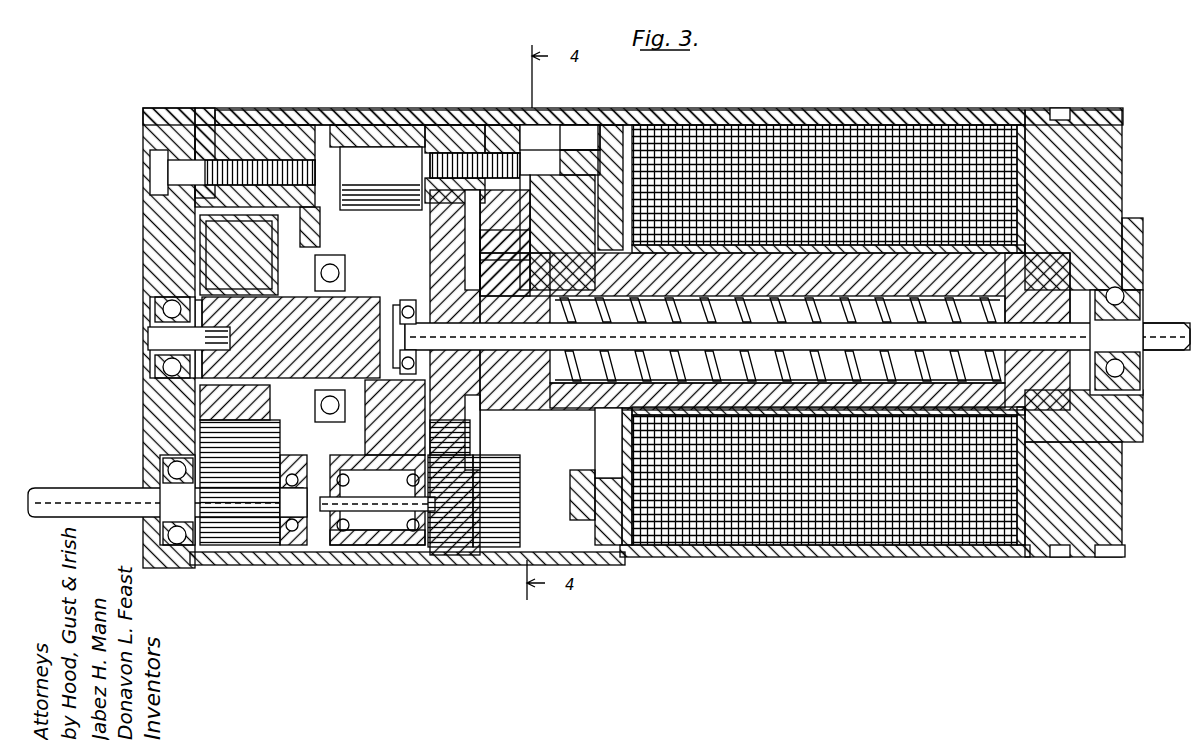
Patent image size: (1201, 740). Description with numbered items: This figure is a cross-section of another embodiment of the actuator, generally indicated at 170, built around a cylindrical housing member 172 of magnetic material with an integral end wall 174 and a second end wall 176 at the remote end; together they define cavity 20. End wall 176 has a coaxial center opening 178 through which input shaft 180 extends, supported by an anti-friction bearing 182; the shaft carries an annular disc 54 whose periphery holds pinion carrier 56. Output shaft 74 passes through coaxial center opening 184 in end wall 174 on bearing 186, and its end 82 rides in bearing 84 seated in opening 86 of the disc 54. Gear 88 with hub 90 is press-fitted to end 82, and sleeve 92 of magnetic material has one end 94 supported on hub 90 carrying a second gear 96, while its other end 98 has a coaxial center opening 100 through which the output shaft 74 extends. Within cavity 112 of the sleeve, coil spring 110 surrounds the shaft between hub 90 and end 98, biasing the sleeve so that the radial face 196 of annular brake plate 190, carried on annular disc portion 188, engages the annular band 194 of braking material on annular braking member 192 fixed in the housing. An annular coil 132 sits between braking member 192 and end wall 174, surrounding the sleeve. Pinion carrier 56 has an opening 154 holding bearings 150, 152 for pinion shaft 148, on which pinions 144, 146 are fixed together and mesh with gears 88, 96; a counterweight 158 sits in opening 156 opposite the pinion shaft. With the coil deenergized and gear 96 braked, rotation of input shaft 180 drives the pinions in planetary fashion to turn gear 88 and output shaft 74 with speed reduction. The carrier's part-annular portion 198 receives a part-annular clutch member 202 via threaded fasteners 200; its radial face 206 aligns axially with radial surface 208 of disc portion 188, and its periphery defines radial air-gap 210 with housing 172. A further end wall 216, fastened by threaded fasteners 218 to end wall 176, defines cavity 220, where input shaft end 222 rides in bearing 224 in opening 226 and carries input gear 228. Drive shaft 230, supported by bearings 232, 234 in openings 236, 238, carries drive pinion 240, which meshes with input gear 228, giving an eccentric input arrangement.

The cavity 20 is at (565, 132).
The annular disc 54 is at (400, 439).
The pinion carrier 56 is at (380, 548).
The output shaft 74 is at (1158, 320).
The end of output shaft 82 is at (420, 337).
The bearing 84 is at (400, 385).
The opening 86 is at (408, 305).
The gear 88 is at (458, 265).
The hub 90 is at (514, 314).
The sleeve 92 is at (830, 401).
The end of sleeve 94 is at (520, 277).
The second gear 96 is at (530, 247).
The other end of sleeve 98 is at (775, 331).
The coaxial center opening 100 is at (1030, 318).
The coil spring 110 is at (795, 315).
The cavity 112 is at (820, 395).
The annular coil 132 is at (862, 150).
The pinion 144 is at (450, 548).
The pinion 146 is at (498, 548).
The pinion shaft 148 is at (370, 505).
The bearing 150 is at (343, 530).
The bearing 152 is at (412, 530).
The opening 154 is at (360, 548).
The opening 156 is at (350, 130).
The counterweight 158 is at (385, 165).
The embodiment of the invention 170 is at (990, 81).
The cylindrical housing member 172 is at (785, 110).
The end wall 174 is at (1135, 165).
The end wall 176 is at (285, 140).
The coaxial center opening 178 is at (332, 250).
The input shaft 180 is at (298, 345).
The anti-friction bearing 182 is at (330, 395).
The coaxial center opening 184 is at (1120, 285).
The bearing 186 is at (1130, 385).
The annular disc portion 188 is at (548, 190).
The annular brake plate 190 is at (575, 505).
The annular braking member 192 is at (625, 560).
The annular band of braking material 194 is at (606, 475).
The radial face 196 is at (612, 220).
The part-annular portion 198 is at (445, 130).
The threaded fasteners 200 is at (470, 160).
The part-annular clutch member 202 is at (525, 138).
The radial face 206 is at (575, 160).
The radial surface 208 is at (535, 200).
The radial air-gap 210 is at (505, 135).
The end wall 216 is at (143, 225).
The threaded fasteners 218 is at (235, 150).
The cavity 220 is at (200, 250).
The end of input shaft 222 is at (150, 340).
The bearing 224 is at (150, 300).
The opening 226 is at (150, 385).
The input gear 228 is at (248, 264).
The drive shaft 230 is at (60, 488).
The bearing 232 is at (188, 548).
The bearing 234 is at (285, 548).
The opening 236 is at (175, 548).
The opening 238 is at (292, 540).
The drive pinion 240 is at (248, 548).